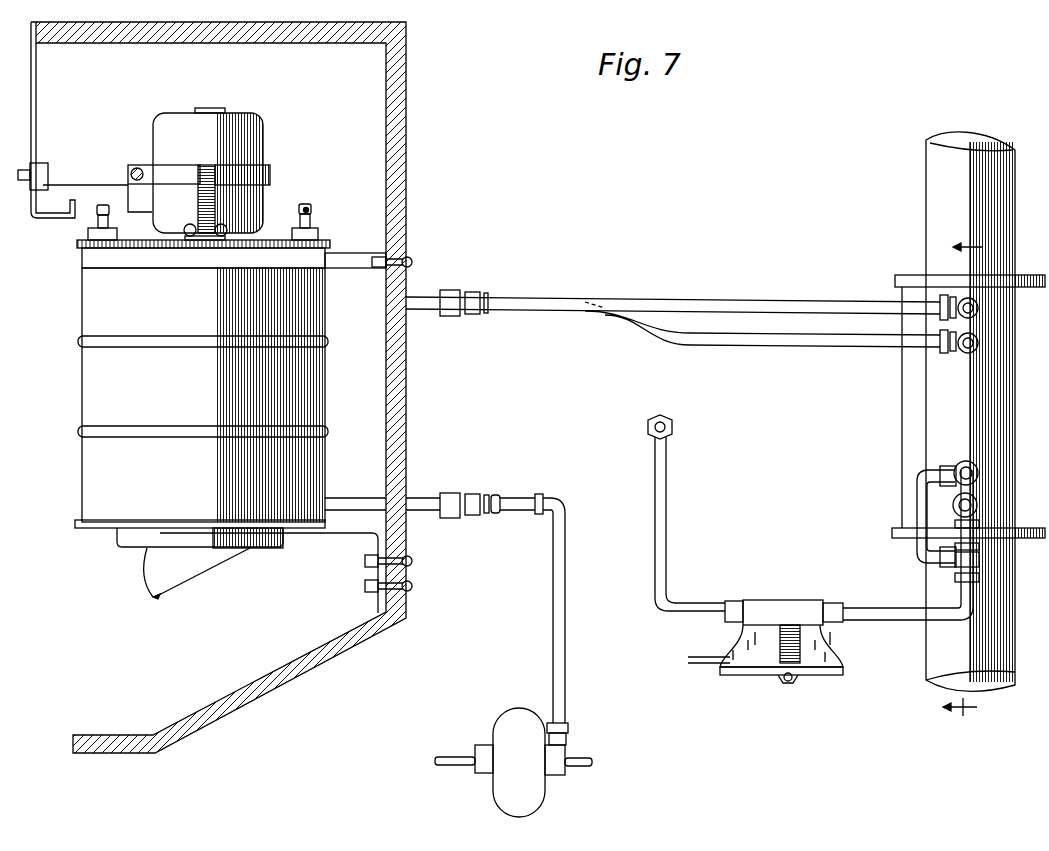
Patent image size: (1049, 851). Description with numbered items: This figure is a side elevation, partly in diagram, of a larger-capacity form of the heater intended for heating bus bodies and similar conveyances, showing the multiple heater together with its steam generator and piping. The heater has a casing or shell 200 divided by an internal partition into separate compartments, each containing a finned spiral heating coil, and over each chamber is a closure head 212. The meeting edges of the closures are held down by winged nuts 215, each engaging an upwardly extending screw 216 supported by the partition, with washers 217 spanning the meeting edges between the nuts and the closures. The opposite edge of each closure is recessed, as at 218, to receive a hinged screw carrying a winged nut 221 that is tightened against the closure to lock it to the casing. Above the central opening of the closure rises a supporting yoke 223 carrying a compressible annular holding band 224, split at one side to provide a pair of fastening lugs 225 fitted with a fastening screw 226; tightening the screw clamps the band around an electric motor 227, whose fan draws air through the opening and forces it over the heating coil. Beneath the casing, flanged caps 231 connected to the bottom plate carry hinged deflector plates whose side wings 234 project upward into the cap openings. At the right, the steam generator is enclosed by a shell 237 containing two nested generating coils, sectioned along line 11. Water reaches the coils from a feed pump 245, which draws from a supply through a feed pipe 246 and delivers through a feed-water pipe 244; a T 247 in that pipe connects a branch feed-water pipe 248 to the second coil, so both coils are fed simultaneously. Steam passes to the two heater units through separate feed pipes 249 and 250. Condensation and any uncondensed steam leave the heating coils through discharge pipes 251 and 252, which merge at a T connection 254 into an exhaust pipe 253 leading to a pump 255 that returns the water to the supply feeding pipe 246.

The section line 11 is at (963, 481).
The casing or shell 200 is at (88, 375).
The closure head 212 is at (278, 240).
The winged nut 215 is at (97, 222).
The screw 216 is at (309, 212).
The washer 217 is at (325, 242).
The recess 218 is at (197, 238).
The winged nut 221 is at (188, 237).
The supporting yoke 223 is at (205, 200).
The holding band 224 is at (270, 172).
The fastening lug 225 is at (131, 172).
The fastening screw 226 is at (137, 168).
The electric motor 227 is at (178, 116).
The flanged cap 231 is at (270, 548).
The side wing 234 is at (202, 560).
The shell 237 is at (902, 427).
The feed-water pipe 244 is at (878, 620).
The feed pump 245 is at (787, 603).
The feed pipe 246 is at (666, 510).
The T 247 is at (955, 565).
The branch feed-water pipe 248 is at (917, 500).
The feed pipe 249 is at (805, 347).
The feed pipe 250 is at (748, 298).
The discharge pipe 251 is at (345, 495).
The discharge pipe 252 is at (422, 498).
The exhaust pipe 253 is at (565, 628).
The T connection 254 is at (520, 500).
The pump 255 is at (518, 712).